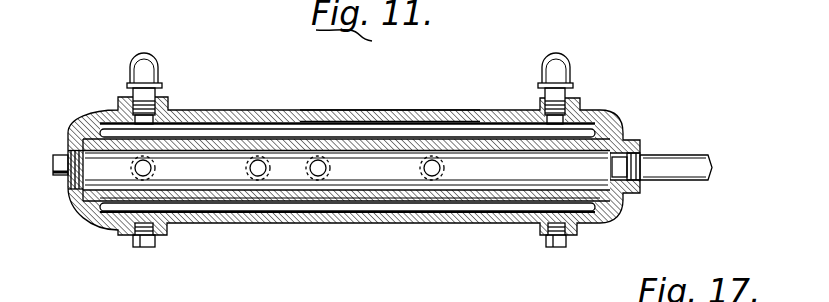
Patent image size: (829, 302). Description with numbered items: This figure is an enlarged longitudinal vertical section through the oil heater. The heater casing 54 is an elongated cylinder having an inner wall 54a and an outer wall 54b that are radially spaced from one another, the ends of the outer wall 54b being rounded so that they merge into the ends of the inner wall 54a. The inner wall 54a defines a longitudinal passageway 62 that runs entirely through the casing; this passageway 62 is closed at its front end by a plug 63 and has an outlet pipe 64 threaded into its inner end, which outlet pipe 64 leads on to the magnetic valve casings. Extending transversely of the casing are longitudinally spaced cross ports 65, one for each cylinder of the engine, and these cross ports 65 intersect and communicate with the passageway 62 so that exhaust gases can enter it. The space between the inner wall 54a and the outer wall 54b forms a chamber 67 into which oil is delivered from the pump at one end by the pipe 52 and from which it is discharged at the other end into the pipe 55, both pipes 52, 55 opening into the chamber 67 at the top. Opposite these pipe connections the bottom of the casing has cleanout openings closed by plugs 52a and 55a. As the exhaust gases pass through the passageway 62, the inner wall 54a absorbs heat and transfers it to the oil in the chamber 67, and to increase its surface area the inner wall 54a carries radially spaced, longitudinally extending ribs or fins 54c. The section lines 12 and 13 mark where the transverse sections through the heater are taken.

The section line 12— 12 is at (144, 84).
The section line 13— 13 is at (555, 84).
The pipe 52 is at (160, 88).
The plug 52a is at (148, 247).
The heater casing 54 is at (303, 94).
The inner wall 54a is at (413, 147).
The outer wall 54b is at (407, 98).
The ribs or fins 54c is at (488, 133).
The pipe 55 is at (570, 90).
The plug 55a is at (560, 244).
The longitudinal passageway 62 is at (352, 177).
The plug 63 is at (67, 183).
The outlet pipe 64 is at (711, 160).
The cross ports 65 is at (143, 170).
The chamber 67 is at (395, 212).